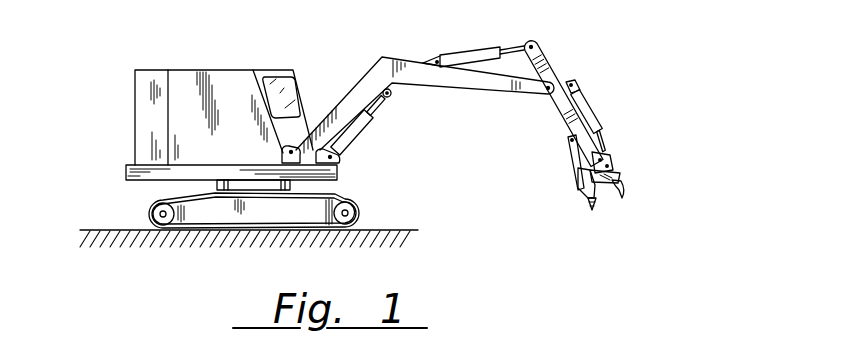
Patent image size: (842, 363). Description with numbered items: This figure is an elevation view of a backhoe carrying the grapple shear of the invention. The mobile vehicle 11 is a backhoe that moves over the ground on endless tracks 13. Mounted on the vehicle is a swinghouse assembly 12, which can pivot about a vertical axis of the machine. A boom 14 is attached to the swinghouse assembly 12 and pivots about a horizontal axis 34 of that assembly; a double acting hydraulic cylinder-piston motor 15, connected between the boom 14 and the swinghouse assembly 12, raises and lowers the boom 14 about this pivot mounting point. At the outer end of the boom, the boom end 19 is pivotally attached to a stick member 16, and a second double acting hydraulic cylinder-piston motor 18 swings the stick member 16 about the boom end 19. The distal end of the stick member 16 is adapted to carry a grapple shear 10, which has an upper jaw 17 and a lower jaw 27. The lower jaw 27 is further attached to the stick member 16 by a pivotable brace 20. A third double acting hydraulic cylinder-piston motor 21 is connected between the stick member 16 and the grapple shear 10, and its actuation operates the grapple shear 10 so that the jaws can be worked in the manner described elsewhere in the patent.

The grapple shear 10 is at (640, 163).
The mobile vehicle 11 is at (129, 105).
The swinghouse assembly 12 is at (212, 70).
The endless tracks 13 is at (153, 212).
The boom 14 is at (364, 70).
The double acting hydraulic cylinder-piston motor 15 is at (364, 136).
The stick member 16 is at (547, 53).
The upper jaw 17 is at (628, 189).
The double acting hydraulic cylinder-piston motor 18 is at (468, 50).
The boom end 19 is at (523, 97).
The pivotable brace 20 is at (575, 164).
The double acting hydraulic cylinder-piston motor 21 is at (583, 92).
The lower jaw 27 is at (587, 203).
The horizontal axis 34 is at (283, 151).